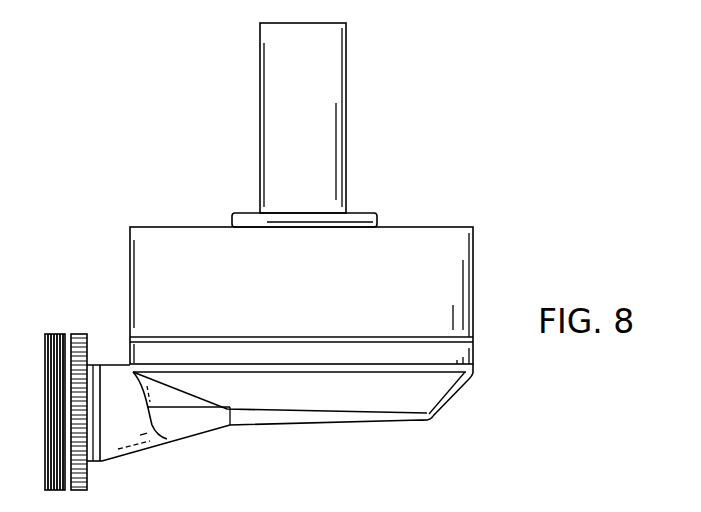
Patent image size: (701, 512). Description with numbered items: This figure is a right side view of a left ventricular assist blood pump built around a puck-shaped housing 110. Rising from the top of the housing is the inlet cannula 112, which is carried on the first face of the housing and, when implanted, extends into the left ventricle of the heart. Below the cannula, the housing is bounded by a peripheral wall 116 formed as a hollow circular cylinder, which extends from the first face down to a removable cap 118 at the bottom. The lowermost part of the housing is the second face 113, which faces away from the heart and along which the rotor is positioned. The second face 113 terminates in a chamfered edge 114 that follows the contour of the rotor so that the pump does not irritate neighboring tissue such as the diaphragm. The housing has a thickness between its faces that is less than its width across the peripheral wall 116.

The puck-shaped housing 110 is at (533, 183).
The inlet cannula 112 is at (335, 127).
The second face 113 is at (243, 447).
The chamfered edge 114 is at (428, 420).
The peripheral wall 116 is at (456, 279).
The removable cap 118 is at (438, 387).